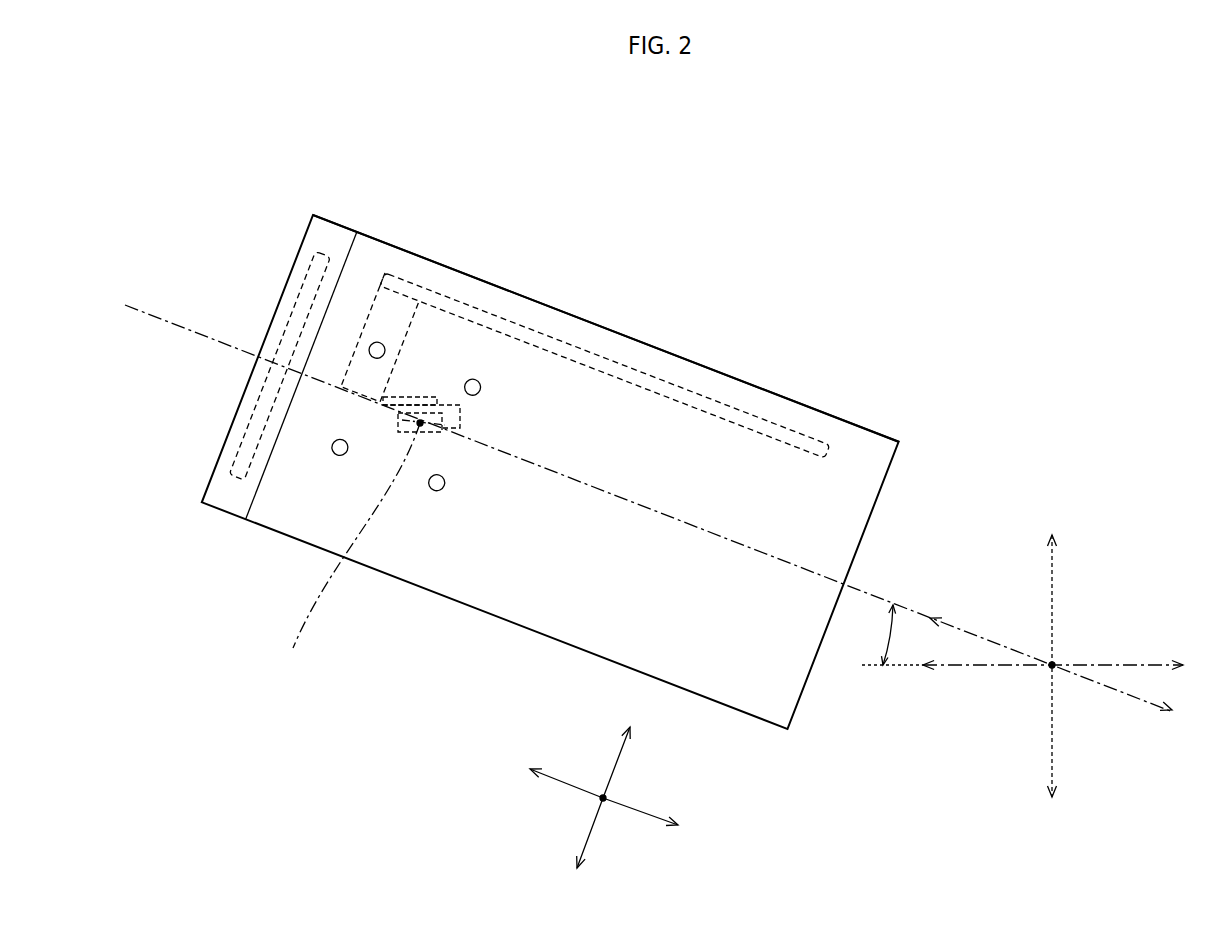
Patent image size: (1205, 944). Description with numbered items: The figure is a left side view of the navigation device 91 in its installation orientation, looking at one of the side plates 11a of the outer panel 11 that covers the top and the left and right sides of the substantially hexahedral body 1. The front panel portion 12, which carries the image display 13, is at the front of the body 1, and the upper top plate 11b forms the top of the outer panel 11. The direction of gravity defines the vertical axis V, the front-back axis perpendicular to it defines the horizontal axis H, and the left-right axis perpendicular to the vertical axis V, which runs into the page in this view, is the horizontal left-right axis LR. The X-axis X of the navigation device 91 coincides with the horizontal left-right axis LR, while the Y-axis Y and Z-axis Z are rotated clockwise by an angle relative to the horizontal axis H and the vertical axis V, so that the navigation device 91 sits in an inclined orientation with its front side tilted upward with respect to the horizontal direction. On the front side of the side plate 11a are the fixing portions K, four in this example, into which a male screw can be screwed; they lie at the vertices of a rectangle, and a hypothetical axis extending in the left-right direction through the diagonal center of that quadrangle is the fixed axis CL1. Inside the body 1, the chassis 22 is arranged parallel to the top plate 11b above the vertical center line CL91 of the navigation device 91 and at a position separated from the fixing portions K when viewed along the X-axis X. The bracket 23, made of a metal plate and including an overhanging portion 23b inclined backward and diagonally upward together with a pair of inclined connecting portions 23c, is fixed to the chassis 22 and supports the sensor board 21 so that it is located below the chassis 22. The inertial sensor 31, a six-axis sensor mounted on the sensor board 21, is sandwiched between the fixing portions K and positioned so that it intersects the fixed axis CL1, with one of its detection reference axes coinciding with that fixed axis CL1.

The body 1 is at (748, 352).
The outer panel 11 is at (582, 333).
The side plate 11a is at (842, 484).
The top plate 11b is at (670, 352).
The front panel portion 12 is at (333, 235).
The image display 13 is at (308, 273).
The sensor board 21 is at (460, 433).
The chassis 22 is at (760, 403).
The bracket 23 is at (286, 300).
The overhanging portion 23b is at (423, 395).
The inclined connecting portion 23c is at (350, 363).
The inertial sensor 31 is at (420, 430).
The navigation device 91 is at (903, 352).
The vertical center line CL91 is at (614, 500).
The fixed axis CL1 is at (350, 552).
The fixing portion K is at (478, 428).
The vertical axis V is at (1057, 582).
The horizontal axis H is at (1125, 663).
The horizontal left-right axis LR is at (1043, 673).
The X-axis X is at (587, 802).
The Y-axis Y is at (632, 813).
The Z-axis Z is at (618, 773).